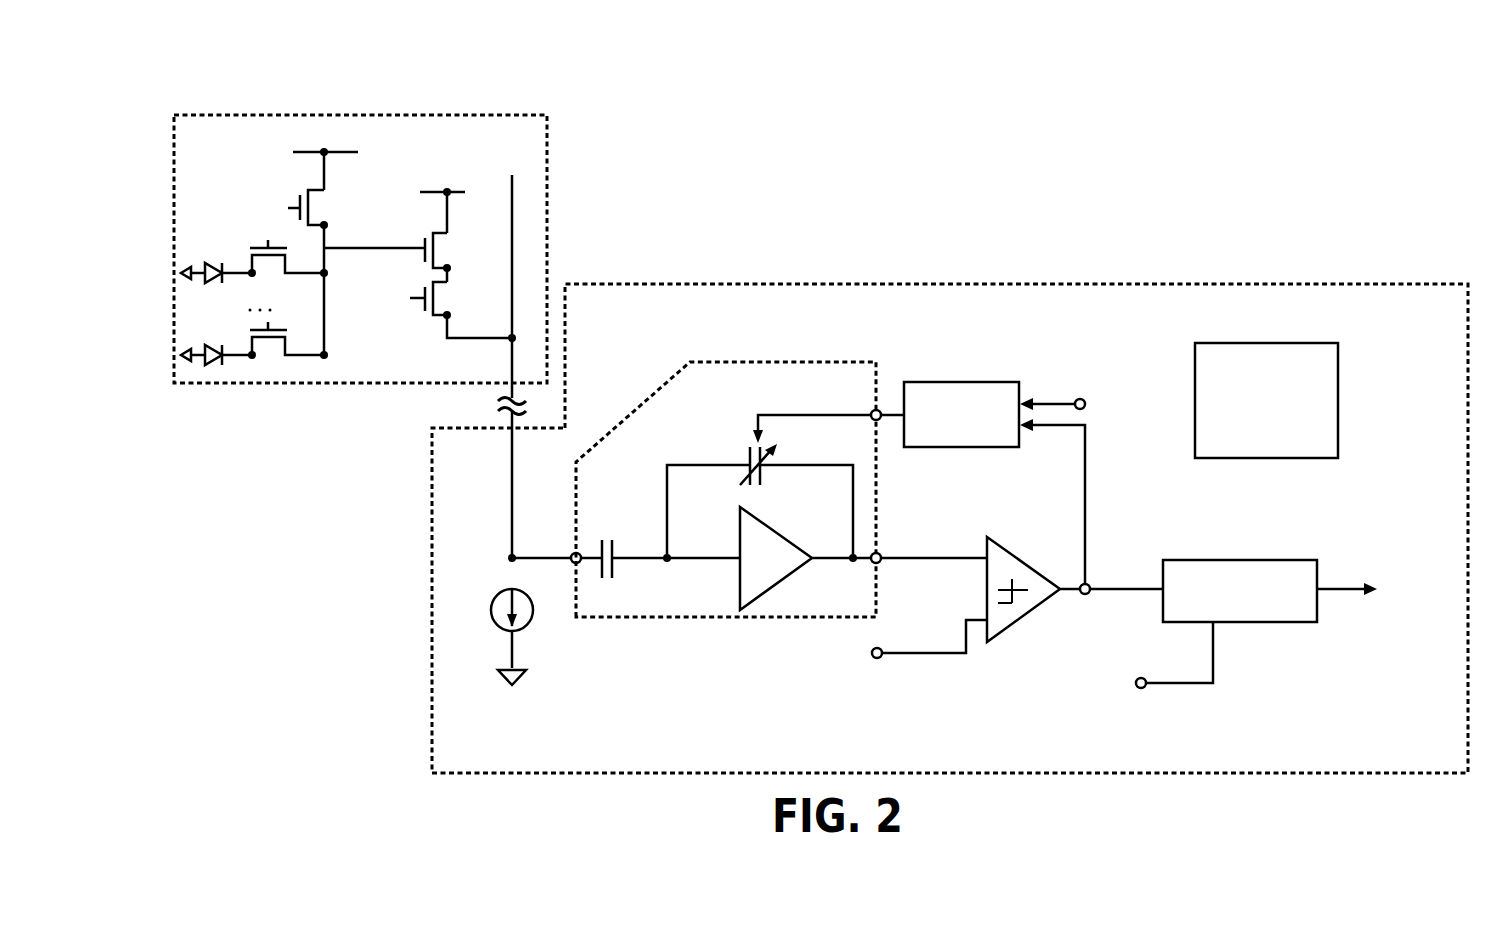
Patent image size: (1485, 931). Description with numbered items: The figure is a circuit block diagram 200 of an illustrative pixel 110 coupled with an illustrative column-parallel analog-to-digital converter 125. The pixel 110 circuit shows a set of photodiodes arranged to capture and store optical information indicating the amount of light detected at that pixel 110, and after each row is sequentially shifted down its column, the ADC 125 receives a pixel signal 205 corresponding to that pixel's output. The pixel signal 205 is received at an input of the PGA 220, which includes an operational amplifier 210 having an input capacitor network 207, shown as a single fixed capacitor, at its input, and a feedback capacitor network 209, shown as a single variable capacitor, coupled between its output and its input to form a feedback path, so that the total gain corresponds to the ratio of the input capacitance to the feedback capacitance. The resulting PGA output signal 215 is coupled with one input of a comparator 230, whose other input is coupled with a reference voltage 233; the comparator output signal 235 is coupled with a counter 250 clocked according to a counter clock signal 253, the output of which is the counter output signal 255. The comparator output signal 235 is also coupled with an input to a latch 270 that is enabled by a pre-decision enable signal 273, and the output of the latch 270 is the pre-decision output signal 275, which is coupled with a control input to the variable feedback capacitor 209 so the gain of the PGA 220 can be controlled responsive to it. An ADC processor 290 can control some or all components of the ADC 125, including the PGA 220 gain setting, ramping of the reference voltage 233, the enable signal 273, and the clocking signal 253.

The circuit block diagram 200 is at (1261, 88).
The pixel 110 is at (174, 153).
The column-parallel analog-to-digital converter (ADC) 125 is at (690, 284).
The pixel signal 205 is at (555, 547).
The input capacitor network 207 is at (625, 533).
The feedback capacitor network 209 is at (745, 453).
The operational amplifier 210 is at (778, 538).
The PGA output signal 215 is at (929, 549).
The programmable gain amplifier (PGA) 220 is at (648, 402).
The comparator 230 is at (1010, 554).
The reference voltage signal 233 is at (906, 644).
The comparator output signal 235 is at (1091, 519).
The counter 250 is at (1230, 560).
The counter clock signal 253 is at (1150, 660).
The counter output signal 255 is at (1371, 592).
The latch 270 is at (962, 383).
The pre-decision enable signal 273 is at (1077, 405).
The pre-decision output signal 275 is at (828, 416).
The ADC processor 290 is at (1248, 441).